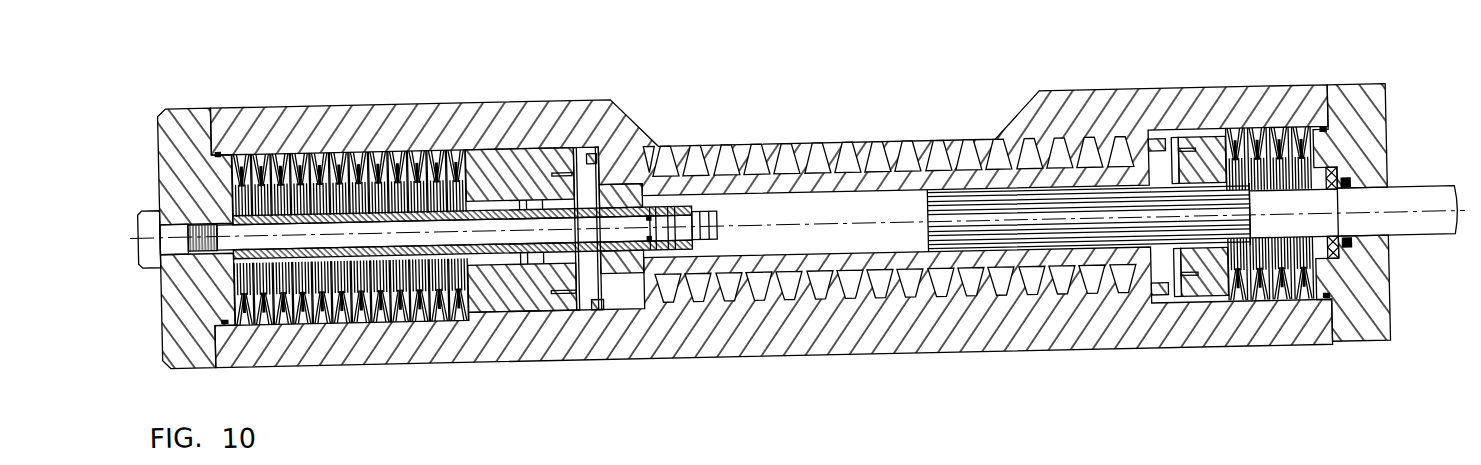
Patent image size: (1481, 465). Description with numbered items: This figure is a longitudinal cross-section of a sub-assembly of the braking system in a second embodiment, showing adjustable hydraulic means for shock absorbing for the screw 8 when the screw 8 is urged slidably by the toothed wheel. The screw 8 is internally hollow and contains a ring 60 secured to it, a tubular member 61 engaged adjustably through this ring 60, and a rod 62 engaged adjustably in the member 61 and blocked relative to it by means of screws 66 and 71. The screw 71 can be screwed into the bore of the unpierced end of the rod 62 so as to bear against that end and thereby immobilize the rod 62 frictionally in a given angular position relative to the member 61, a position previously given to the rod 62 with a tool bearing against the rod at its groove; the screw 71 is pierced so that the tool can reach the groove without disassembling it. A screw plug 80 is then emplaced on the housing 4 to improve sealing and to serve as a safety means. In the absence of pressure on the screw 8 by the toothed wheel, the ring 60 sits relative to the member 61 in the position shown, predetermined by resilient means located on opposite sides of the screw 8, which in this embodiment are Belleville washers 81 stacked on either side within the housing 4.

The housing 4 is at (1372, 251).
The screw 8 is at (915, 143).
The ring 60 is at (626, 277).
The tubular member 61 is at (541, 250).
The rod 62 is at (489, 250).
The screw 66 is at (717, 211).
The screw 71 is at (189, 216).
The screw plug 80 is at (148, 192).
The Belleville washers 81 is at (373, 315).